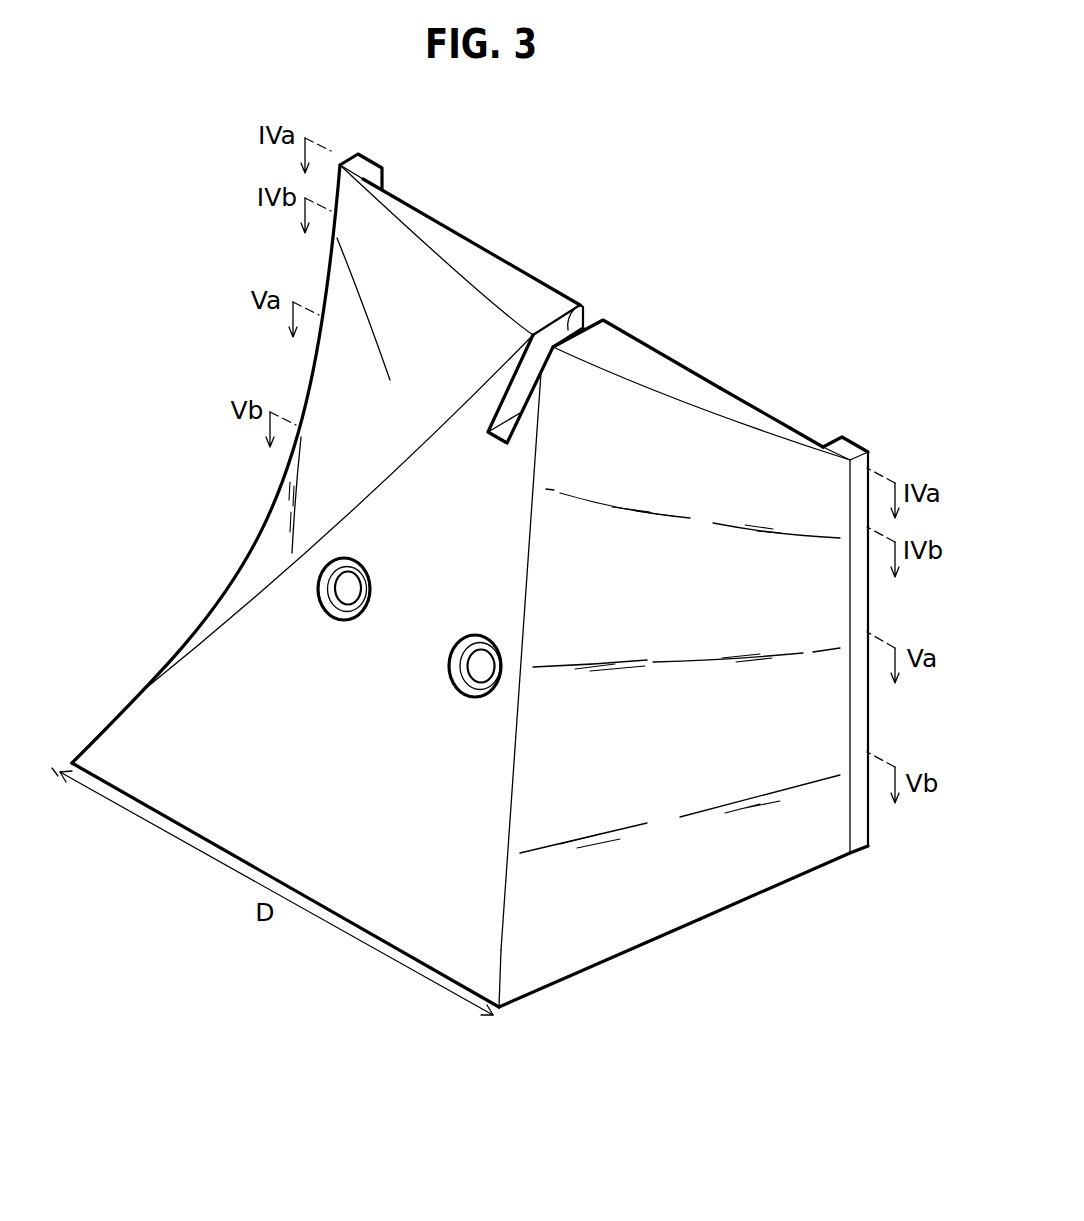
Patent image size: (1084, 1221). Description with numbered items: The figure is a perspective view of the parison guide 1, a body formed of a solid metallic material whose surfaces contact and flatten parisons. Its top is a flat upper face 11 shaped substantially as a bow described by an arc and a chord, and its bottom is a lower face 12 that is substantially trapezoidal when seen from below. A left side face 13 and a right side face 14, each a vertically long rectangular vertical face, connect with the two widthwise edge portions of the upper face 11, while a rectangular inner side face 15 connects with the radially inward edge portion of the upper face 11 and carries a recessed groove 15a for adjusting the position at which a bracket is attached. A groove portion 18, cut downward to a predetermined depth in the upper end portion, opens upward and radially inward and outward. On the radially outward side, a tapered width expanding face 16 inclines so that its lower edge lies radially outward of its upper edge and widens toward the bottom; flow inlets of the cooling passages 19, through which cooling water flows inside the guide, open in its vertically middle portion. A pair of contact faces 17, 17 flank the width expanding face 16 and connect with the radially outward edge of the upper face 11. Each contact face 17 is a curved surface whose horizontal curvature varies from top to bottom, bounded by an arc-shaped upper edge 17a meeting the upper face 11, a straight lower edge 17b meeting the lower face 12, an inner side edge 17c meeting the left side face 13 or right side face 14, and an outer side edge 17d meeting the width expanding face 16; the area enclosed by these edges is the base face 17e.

The parison guide 1 is at (694, 241).
The upper face 11 is at (635, 368).
The lower face 12 is at (604, 966).
The left side face 13 is at (341, 164).
The right side face 14 is at (860, 468).
The inner side face 15 is at (733, 393).
The recessed groove 15a is at (777, 416).
The width expanding face 16 is at (355, 883).
The contact face 17 is at (273, 545).
The upper edge 17a is at (448, 278).
The lower edge 17b is at (772, 893).
The inner side edge 17c is at (847, 822).
The outer side edge 17d is at (507, 940).
The base face 17e is at (817, 713).
The groove portion 18 is at (568, 330).
The cooling passage 19 is at (477, 665).